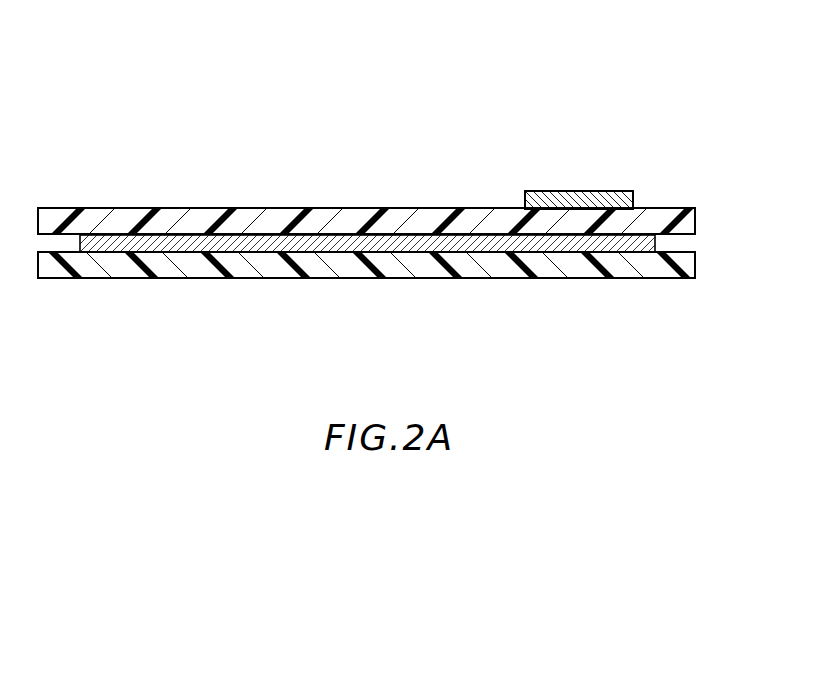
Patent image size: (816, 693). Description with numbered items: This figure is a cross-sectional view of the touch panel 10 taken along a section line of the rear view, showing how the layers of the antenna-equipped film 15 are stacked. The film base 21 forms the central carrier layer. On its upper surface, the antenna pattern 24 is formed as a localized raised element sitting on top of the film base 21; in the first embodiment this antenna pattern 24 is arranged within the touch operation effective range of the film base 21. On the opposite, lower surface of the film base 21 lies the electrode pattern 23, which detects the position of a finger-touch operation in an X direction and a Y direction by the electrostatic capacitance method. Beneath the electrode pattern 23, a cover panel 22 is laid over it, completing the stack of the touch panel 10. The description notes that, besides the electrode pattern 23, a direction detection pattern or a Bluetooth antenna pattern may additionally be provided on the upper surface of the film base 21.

The touch panel 10 is at (486, 76).
The antenna-equipped film 15 is at (682, 130).
The film base 21 is at (655, 212).
The cover panel 22 is at (162, 266).
The electrode pattern 23 is at (653, 241).
The antenna pattern 24 is at (590, 190).